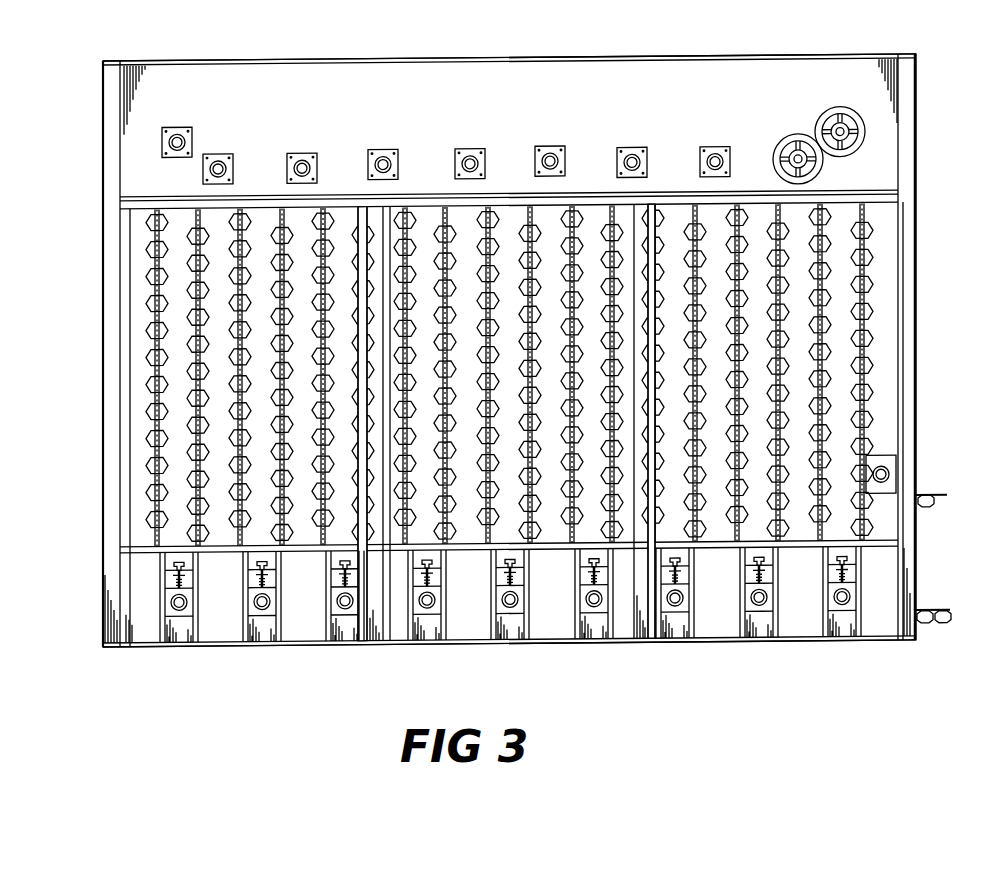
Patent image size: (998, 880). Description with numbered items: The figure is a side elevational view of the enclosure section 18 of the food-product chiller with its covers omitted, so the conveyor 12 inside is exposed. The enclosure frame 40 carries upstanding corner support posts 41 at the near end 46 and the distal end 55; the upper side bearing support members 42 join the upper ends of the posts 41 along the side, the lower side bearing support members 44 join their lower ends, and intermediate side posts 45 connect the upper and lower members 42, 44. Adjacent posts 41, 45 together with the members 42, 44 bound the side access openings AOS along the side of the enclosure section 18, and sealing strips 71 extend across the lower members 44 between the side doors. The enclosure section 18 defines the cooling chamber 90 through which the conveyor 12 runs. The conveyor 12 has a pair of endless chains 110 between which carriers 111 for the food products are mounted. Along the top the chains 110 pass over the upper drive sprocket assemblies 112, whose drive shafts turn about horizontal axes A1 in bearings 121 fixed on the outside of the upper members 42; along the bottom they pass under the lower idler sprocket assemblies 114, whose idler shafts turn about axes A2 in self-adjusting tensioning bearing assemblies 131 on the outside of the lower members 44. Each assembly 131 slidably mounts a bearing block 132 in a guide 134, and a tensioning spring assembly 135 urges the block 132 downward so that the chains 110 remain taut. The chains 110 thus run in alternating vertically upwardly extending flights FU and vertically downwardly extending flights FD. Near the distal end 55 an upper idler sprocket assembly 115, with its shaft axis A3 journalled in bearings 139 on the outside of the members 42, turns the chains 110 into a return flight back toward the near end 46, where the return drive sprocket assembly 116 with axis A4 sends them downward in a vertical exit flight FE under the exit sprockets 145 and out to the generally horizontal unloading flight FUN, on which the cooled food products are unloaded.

The conveyor 12 is at (872, 432).
The enclosure section 18 is at (96, 91).
The enclosure frame 40 is at (312, 70).
The corner support posts 41 is at (112, 280).
The upper side bearing support members 42 is at (540, 72).
The lower side bearing support members 44 is at (549, 650).
The intermediate side posts 45 is at (373, 207).
The near end 46 is at (920, 388).
The distal end 55 is at (100, 378).
The sealing strips 71 is at (381, 650).
The cooling chamber 90 is at (750, 225).
The endless chains 110 is at (282, 222).
The carriers 111 is at (197, 222).
The upper drive sprocket assemblies 112 is at (385, 162).
The lower idler sprocket assemblies 114 is at (190, 604).
The upper idler sprocket assembly 115 is at (177, 138).
The return drive sprocket assembly 116 is at (842, 136).
The bearings 121 is at (296, 157).
The self-adjusting tensioning bearing assemblies 131 is at (252, 632).
The bearing blocks 132 is at (497, 610).
The guide 134 is at (490, 565).
The tensioning spring assembly 135 is at (495, 578).
The bearings 139 is at (190, 130).
The exit sprockets 145 is at (895, 480).
The shaft axis A1 is at (225, 170).
The shaft axis A2 is at (340, 604).
The shaft axis A3 is at (183, 143).
The shaft axis A4 is at (848, 140).
The side access openings AOS is at (520, 210).
The exit flight FE is at (866, 212).
The upwardly extending flights FU is at (150, 487).
The downwardly extending flights FD is at (198, 310).
The unloading flight FUN is at (942, 502).